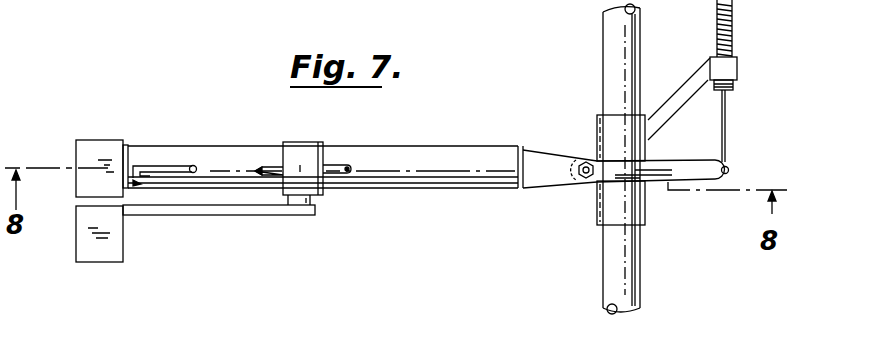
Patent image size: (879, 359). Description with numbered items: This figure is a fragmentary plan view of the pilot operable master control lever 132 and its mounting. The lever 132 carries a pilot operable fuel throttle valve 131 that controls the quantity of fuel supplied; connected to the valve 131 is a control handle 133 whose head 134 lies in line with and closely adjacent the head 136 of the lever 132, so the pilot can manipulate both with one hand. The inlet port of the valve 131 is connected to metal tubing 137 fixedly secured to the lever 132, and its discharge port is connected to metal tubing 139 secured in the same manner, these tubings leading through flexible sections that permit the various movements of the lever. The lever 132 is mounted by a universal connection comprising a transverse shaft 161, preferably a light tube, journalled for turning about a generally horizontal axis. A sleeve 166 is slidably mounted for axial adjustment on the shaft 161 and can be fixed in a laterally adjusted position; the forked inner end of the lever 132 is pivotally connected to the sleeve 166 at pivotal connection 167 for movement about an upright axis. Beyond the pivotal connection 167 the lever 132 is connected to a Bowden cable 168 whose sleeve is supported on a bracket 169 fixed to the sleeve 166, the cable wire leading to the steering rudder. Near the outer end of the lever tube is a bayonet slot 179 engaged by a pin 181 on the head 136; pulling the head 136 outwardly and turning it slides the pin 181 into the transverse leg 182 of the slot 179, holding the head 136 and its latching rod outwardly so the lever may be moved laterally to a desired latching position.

The fuel throttle valve 131 is at (313, 142).
The master control lever 132 is at (487, 152).
The control handle 133 is at (210, 215).
The head of control handle 134 is at (92, 233).
The head of control lever 136 is at (85, 155).
The metal tubing 137 is at (350, 176).
The metal tubing 139 is at (259, 167).
The shaft 161 is at (604, 60).
The sleeve 166 is at (646, 212).
The pivotal connection 167 is at (583, 177).
The Bowden cable 168 is at (733, 30).
The bracket 169 is at (680, 90).
The bayonet slot 179 is at (158, 167).
The pin 181 is at (196, 165).
The leg of slot 182 is at (139, 186).